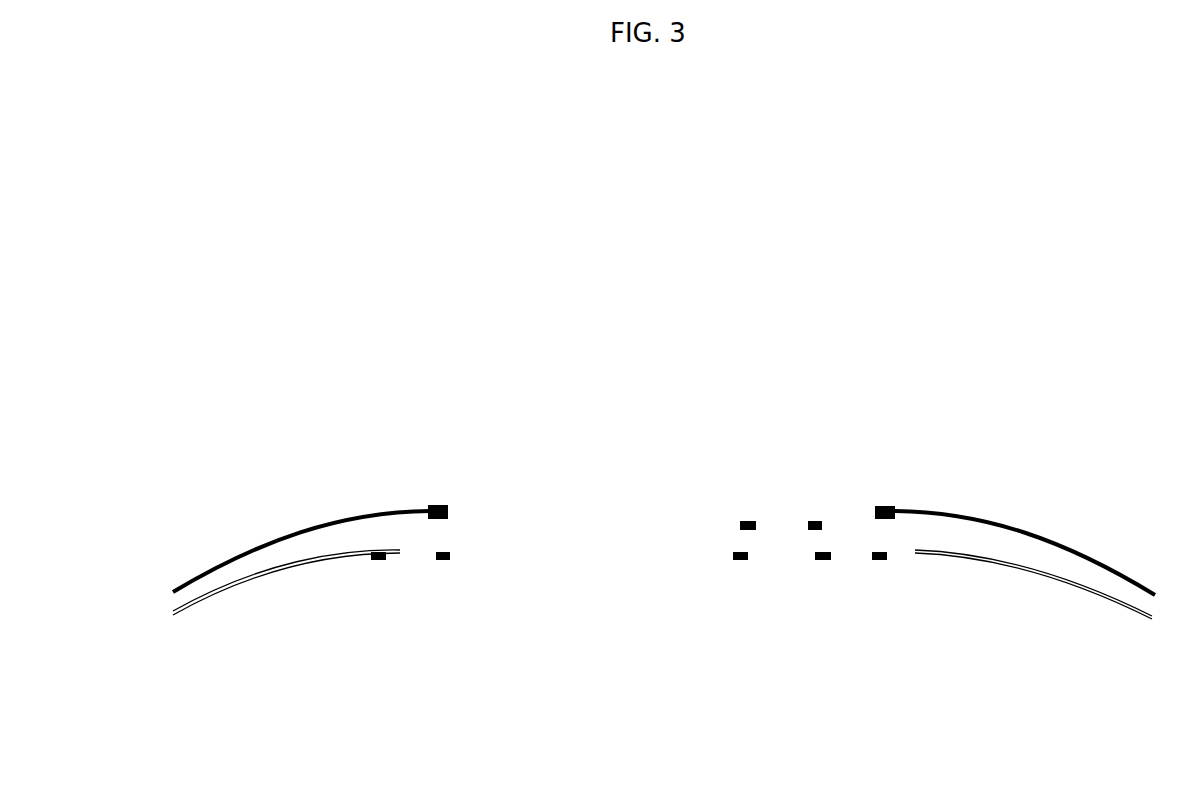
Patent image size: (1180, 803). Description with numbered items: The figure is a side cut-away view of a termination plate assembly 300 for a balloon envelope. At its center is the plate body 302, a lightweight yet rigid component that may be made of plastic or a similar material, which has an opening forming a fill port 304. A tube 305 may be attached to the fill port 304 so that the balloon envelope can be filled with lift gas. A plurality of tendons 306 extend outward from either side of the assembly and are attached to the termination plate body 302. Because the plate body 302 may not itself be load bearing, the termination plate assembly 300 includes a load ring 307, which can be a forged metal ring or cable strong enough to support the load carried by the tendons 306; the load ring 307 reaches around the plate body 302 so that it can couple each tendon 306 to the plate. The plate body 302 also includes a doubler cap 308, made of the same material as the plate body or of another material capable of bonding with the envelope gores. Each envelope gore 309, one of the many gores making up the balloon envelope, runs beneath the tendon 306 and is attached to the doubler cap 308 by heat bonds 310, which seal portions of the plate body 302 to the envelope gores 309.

The termination plate assembly 300 is at (1147, 43).
The plate body 302 is at (648, 525).
The fill port 304 is at (778, 519).
The tube 305 is at (760, 446).
The tendons 306 is at (315, 522).
The load ring 307 is at (445, 500).
The doubler cap 308 is at (411, 552).
The envelope gore 309 is at (309, 568).
The heat bonds 310 is at (386, 559).